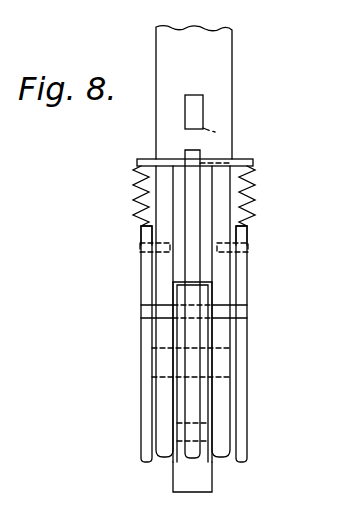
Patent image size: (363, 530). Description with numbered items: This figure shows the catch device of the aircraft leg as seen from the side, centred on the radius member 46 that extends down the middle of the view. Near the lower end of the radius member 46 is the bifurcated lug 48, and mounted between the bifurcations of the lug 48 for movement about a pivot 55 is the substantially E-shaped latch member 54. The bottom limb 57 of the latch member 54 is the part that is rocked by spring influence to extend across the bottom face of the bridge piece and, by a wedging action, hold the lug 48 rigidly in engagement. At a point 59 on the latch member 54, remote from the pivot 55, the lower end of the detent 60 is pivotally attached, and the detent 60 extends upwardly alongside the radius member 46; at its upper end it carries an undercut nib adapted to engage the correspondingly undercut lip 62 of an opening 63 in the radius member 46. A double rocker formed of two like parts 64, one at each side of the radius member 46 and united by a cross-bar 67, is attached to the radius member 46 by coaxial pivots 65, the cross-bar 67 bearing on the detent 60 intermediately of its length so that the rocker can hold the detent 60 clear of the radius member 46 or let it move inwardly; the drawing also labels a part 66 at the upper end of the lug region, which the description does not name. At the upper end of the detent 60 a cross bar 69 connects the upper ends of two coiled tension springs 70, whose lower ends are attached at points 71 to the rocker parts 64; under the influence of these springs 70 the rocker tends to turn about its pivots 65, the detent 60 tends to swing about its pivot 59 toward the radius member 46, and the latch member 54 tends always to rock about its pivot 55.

The radius member 46 is at (215, 52).
The lug 48 is at (160, 396).
The latch member 54 is at (205, 413).
The pivot 55 is at (222, 358).
The bottom limb 57 is at (190, 478).
The point 59 is at (217, 437).
The detent 60 is at (190, 203).
The lip 62 is at (215, 132).
The opening 63 is at (195, 108).
The rocker parts 64 is at (141, 336).
The pivots 65 is at (140, 248).
The yoke 66 is at (173, 290).
The cross-bar 67 is at (222, 309).
The cross bar 69 is at (253, 165).
The coiled tension springs 70 is at (138, 172).
The attachment points 71 is at (140, 234).